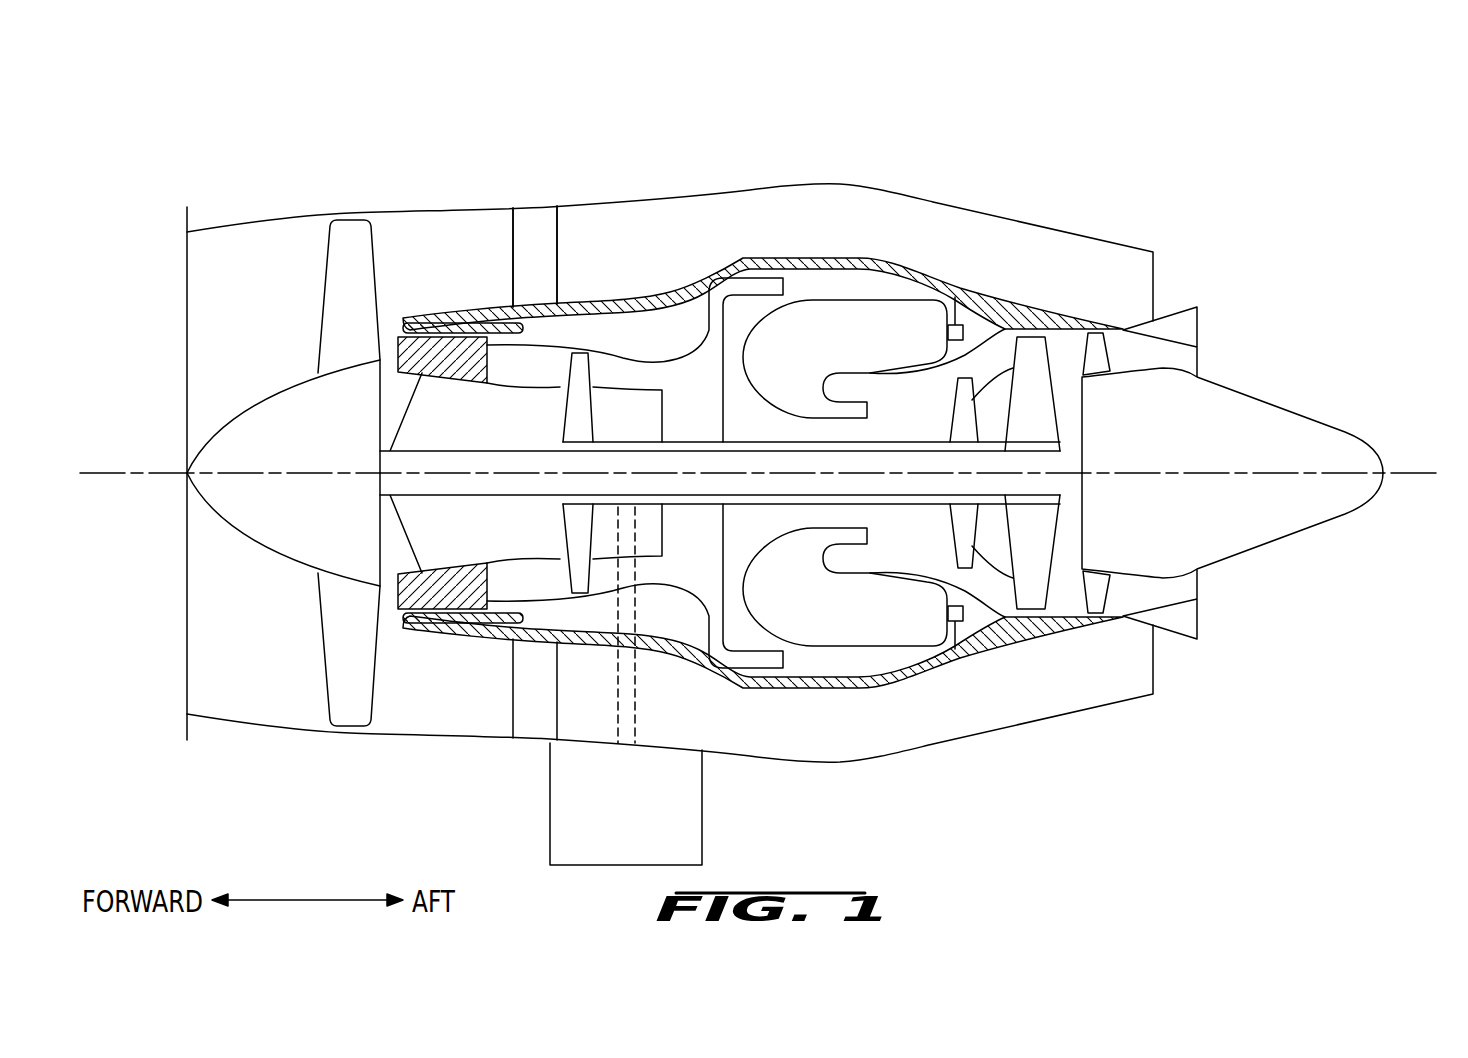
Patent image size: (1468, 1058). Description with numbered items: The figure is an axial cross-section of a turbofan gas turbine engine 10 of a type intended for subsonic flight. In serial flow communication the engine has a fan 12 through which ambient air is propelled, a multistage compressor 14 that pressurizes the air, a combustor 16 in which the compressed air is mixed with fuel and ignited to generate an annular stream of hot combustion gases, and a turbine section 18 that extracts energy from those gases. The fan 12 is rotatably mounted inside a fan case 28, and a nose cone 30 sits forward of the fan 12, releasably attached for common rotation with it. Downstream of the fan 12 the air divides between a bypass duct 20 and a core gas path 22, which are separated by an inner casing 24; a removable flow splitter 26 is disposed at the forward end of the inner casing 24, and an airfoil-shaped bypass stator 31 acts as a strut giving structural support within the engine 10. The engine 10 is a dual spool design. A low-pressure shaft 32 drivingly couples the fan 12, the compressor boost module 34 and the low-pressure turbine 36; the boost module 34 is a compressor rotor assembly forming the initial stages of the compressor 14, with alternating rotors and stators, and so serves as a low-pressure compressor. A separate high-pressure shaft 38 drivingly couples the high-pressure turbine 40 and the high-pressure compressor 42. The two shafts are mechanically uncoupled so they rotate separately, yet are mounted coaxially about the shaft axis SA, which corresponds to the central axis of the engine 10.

The gas turbine engine 10 is at (1008, 152).
The fan 12 is at (340, 637).
The multistage compressor 14 is at (643, 377).
The combustor 16 is at (848, 323).
The turbine section 18 is at (987, 543).
The bypass duct 20 is at (583, 243).
The core gas path 22 is at (513, 592).
The inner casing 24 is at (723, 258).
The flow splitter 26 is at (418, 325).
The fan case 28 is at (280, 217).
The nose cone 30 is at (223, 457).
The bypass stator 31 is at (536, 245).
The low-pressure shaft 32 is at (740, 493).
The compressor boost module 34 is at (460, 350).
The low-pressure turbine 36 is at (1037, 560).
The high-pressure shaft 38 is at (867, 528).
The high-pressure turbine 40 is at (937, 538).
The high-pressure compressor 42 is at (700, 547).
The shaft axis SA is at (1422, 472).